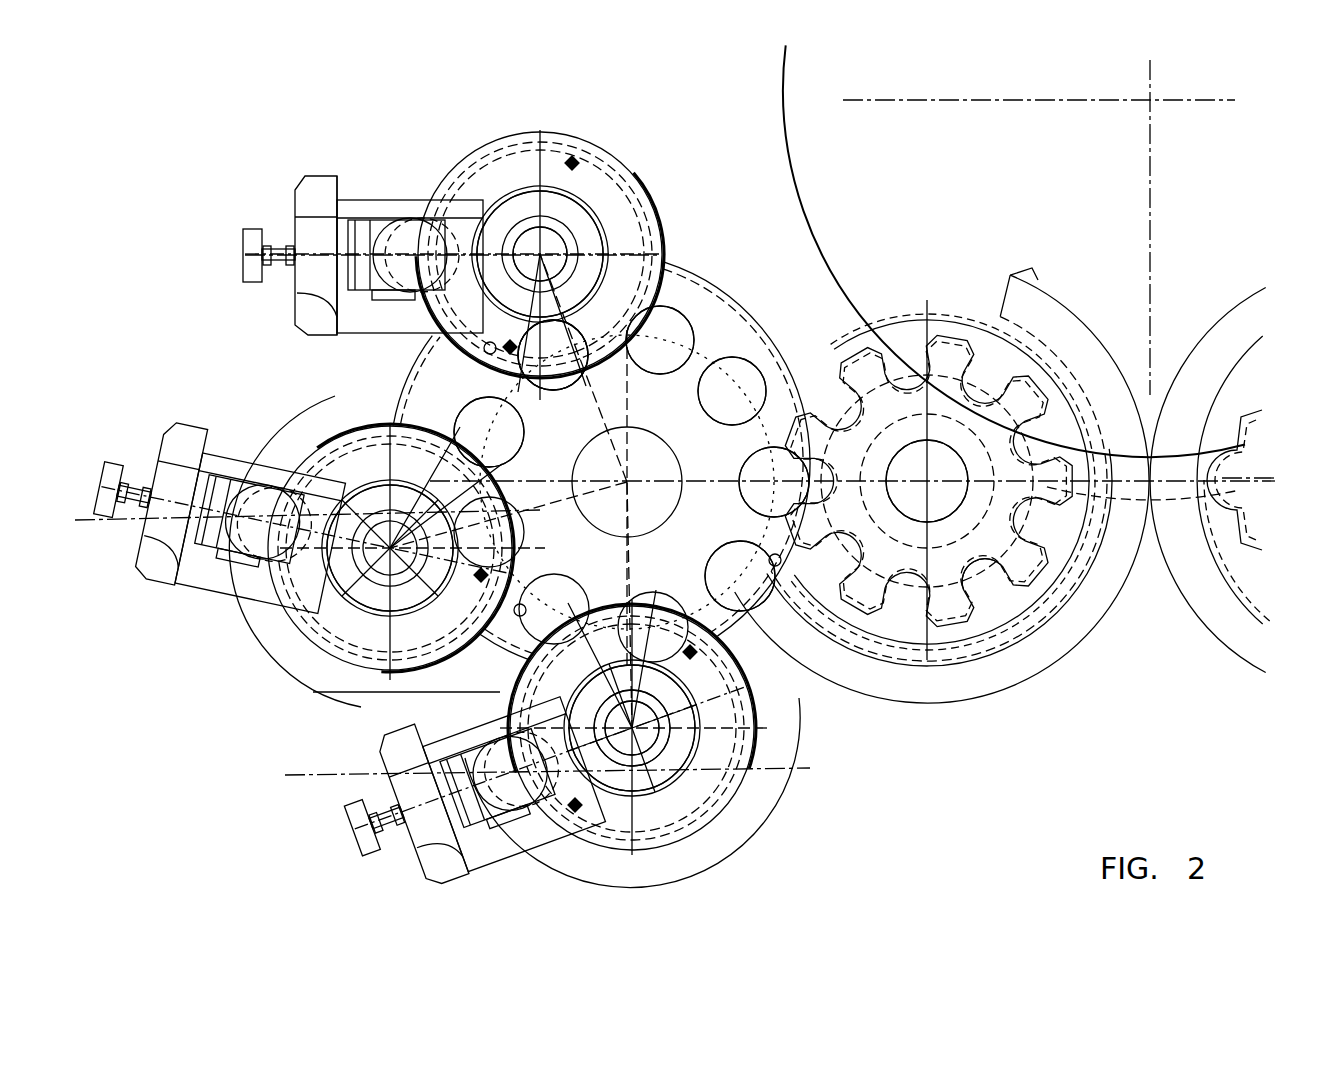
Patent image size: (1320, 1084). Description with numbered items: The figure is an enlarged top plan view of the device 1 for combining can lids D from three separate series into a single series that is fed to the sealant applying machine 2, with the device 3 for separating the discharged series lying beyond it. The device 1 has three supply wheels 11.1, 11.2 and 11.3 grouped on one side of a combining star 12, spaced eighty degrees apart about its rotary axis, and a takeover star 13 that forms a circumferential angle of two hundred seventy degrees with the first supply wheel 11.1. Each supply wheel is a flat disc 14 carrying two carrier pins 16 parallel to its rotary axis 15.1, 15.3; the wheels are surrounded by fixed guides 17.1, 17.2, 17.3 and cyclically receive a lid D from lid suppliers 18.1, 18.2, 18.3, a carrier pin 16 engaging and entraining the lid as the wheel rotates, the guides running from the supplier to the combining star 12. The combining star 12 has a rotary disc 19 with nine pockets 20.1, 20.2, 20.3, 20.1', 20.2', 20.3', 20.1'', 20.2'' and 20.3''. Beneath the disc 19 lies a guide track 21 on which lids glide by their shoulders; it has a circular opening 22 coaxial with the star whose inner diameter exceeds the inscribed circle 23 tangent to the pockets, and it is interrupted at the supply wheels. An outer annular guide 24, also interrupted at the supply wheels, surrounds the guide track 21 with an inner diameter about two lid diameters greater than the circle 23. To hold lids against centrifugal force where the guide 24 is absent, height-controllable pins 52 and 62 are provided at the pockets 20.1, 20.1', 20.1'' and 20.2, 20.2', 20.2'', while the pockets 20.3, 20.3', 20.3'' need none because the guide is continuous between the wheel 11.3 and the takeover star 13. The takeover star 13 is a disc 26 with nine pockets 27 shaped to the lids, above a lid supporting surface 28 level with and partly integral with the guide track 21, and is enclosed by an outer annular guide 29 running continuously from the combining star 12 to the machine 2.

The device for combining can lids 1 is at (197, 827).
The sealant applying machine 2 is at (1014, 166).
The device for separating a lid series 3 is at (1210, 480).
The first supply wheel 11.1 is at (705, 775).
The second supply wheel 11.2 is at (400, 633).
The third supply wheel 11.3 is at (600, 190).
The combining star 12 is at (727, 337).
The takeover star 13 is at (953, 623).
The flat disc 14 is at (660, 813).
The rotary axis 15.1 is at (634, 733).
The rotary axis 15.3 is at (547, 257).
The carrier pin 16 is at (572, 163).
The fixed guide 17.1 is at (768, 772).
The fixed guide 17.2 is at (293, 653).
The fixed guide 17.3 is at (380, 312).
The lid supplier 18.1 is at (437, 883).
The lid supplier 18.2 is at (153, 580).
The lid supplier 18.3 is at (300, 183).
The rotary disc 19 is at (682, 482).
The pocket 20.1 is at (631, 554).
The pocket 20.2 is at (647, 520).
The pocket 20.3 is at (553, 355).
The pocket 20.1' is at (774, 482).
The pocket 20.2' is at (740, 576).
The pocket 20.3' is at (660, 354).
The pocket 20.1'' is at (703, 396).
The pocket 20.2'' is at (597, 456).
The pocket 20.3'' is at (612, 434).
The guide track 21 is at (470, 432).
The circular opening 22 is at (822, 345).
The inscribed circle 23 is at (500, 450).
The outer annular guide 24 is at (400, 405).
The disc 26 is at (920, 578).
The pocket 27 is at (980, 598).
The lid supporting surface 28 is at (1003, 623).
The outer annular guide 29 is at (950, 660).
The height-controllable pin 52 is at (790, 350).
The height-controllable pin 62 is at (490, 348).
The can lid D is at (495, 815).